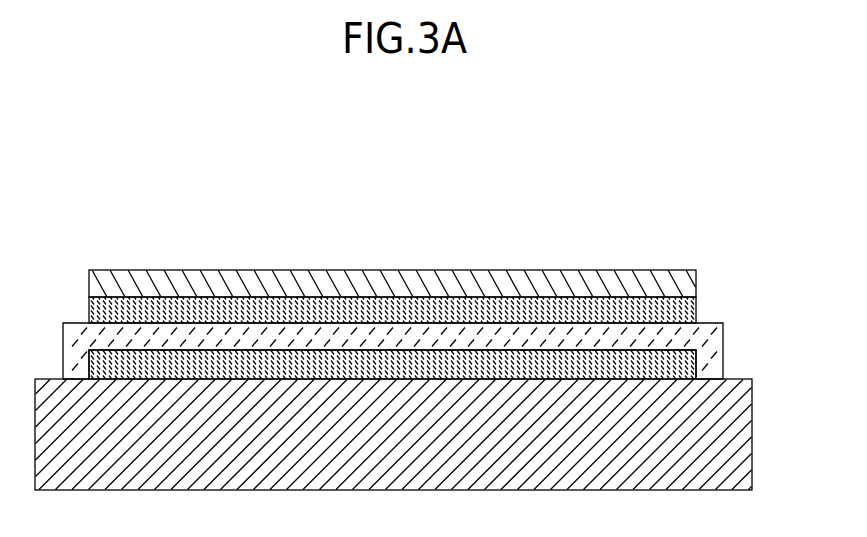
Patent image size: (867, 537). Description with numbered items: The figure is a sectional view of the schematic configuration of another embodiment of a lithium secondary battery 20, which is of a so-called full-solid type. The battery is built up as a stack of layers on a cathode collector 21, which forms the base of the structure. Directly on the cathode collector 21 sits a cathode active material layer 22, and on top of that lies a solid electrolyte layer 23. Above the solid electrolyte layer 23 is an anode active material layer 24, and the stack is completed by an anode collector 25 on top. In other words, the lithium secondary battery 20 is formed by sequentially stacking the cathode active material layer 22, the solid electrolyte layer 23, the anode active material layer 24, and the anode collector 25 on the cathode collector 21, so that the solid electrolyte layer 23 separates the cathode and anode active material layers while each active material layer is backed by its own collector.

The lithium secondary battery 20 is at (815, 172).
The cathode collector 21 is at (743, 427).
The cathode active material layer 22 is at (690, 364).
The solid electrolyte layer 23 is at (717, 339).
The anode active material layer 24 is at (693, 305).
The anode collector 25 is at (688, 276).